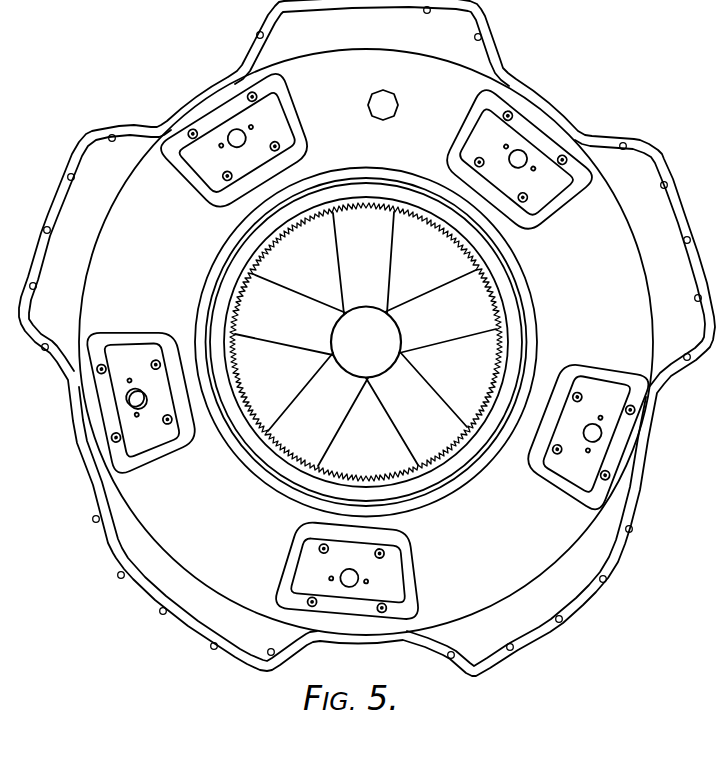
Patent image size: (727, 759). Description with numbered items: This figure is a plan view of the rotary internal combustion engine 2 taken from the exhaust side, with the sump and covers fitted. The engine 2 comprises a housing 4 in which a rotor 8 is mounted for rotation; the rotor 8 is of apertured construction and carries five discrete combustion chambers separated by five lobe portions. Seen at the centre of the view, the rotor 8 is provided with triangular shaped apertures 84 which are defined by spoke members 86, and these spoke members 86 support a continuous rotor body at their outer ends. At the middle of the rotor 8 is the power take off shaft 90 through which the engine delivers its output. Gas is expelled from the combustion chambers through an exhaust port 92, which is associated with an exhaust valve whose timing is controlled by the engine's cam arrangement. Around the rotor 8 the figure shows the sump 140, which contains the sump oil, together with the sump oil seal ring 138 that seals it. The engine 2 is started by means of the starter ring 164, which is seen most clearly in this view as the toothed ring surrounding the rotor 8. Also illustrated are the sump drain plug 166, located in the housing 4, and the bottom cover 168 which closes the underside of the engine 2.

The rotary internal combustion engine 2 is at (542, 82).
The housing 4 is at (143, 442).
The rotor 8 is at (220, 304).
The triangular shaped apertures 84 is at (317, 276).
The spoke members 86 is at (381, 268).
The power take off shaft 90 is at (381, 351).
The exhaust port 92 is at (130, 402).
The sump oil seal ring 138 is at (224, 264).
The sump 140 is at (178, 244).
The starter ring 164 is at (276, 455).
The sump drain plug 166 is at (392, 99).
The bottom cover 168 is at (87, 172).